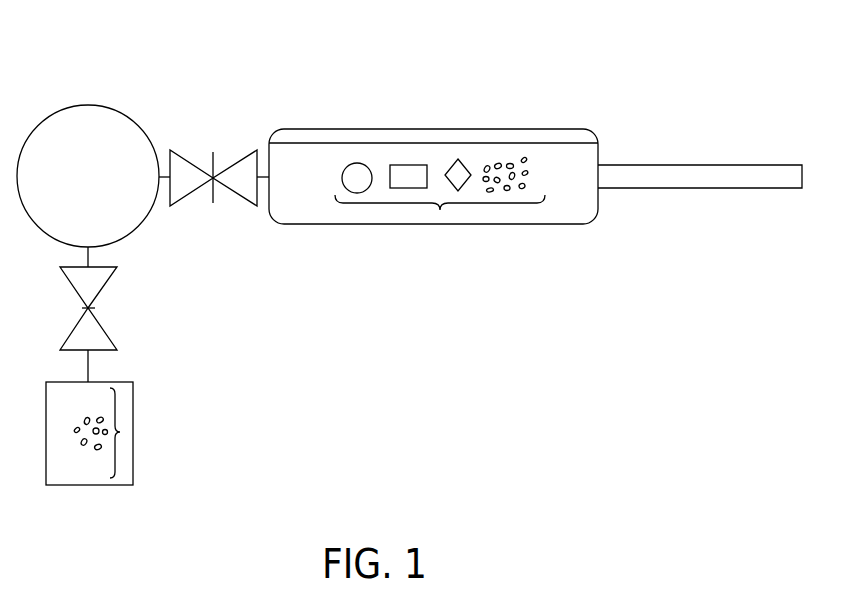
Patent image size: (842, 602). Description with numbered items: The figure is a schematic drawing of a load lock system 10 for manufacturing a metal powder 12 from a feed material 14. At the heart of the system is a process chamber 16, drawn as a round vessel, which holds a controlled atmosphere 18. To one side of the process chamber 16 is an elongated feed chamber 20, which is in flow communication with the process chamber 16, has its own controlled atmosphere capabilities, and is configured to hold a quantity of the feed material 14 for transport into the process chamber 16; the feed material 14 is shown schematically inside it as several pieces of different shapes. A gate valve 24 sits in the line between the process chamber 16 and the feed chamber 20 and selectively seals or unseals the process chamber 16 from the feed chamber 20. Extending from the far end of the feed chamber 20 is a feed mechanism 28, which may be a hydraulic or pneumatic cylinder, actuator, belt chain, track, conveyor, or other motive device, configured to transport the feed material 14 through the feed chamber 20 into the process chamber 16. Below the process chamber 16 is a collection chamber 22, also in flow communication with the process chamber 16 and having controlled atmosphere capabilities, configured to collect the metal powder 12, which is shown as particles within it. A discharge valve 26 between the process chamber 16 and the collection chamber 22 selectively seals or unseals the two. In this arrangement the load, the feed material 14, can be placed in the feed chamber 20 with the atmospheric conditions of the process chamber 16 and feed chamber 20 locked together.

The load lock system 10 is at (527, 68).
The metal powder 12 is at (120, 432).
The feed material 14 is at (440, 210).
The process chamber 16 is at (123, 107).
The controlled atmosphere 18 is at (104, 191).
The feed chamber 20 is at (572, 128).
The collection chamber 22 is at (126, 463).
The gate valve 24 is at (241, 200).
The discharge valve 26 is at (103, 327).
The feed mechanism 28 is at (705, 189).